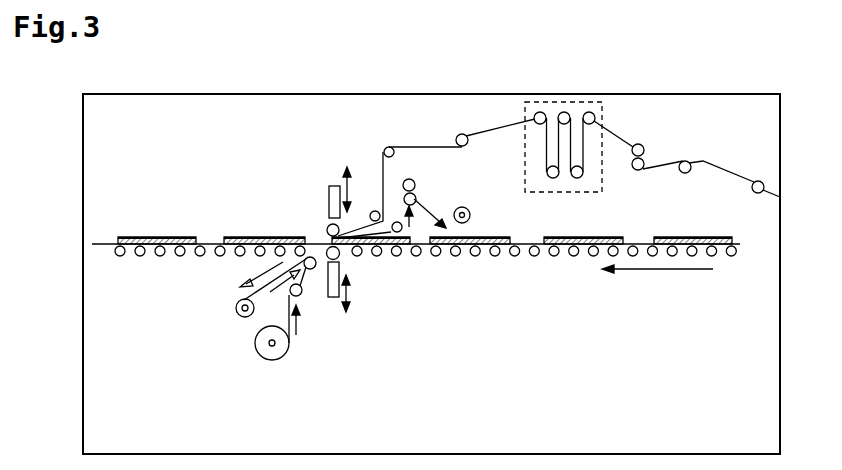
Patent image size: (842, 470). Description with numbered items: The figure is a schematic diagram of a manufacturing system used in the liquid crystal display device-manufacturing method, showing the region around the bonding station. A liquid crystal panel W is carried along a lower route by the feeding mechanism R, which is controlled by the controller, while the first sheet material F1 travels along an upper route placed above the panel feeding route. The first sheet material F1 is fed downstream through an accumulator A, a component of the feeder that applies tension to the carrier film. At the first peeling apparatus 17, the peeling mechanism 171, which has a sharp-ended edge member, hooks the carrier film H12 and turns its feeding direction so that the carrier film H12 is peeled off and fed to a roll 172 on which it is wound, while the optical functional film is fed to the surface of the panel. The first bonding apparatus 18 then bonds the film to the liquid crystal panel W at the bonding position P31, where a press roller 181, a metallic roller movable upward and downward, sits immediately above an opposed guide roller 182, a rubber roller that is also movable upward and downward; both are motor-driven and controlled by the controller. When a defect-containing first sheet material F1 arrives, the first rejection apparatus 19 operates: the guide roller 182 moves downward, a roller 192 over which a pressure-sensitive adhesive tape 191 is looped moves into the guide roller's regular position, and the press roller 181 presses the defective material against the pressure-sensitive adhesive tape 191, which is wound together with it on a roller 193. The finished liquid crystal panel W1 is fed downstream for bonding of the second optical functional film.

The feeding mechanism R is at (575, 268).
The liquid crystal panel W is at (695, 236).
The liquid crystal panel W1 is at (233, 237).
The first sheet material F1 is at (703, 161).
The accumulator A is at (583, 178).
The first bonding apparatus 18 is at (322, 175).
The press roller 181 is at (327, 227).
The bonding position P31 is at (351, 219).
The peeling mechanism 171 is at (415, 192).
The first peeling apparatus 17 is at (432, 191).
The carrier film H12 is at (441, 206).
The roll 172 is at (471, 215).
The guide roller 182 is at (342, 257).
The first rejection apparatus 19 is at (286, 335).
The roller 192 is at (313, 269).
The roller 193 is at (236, 306).
The pressure-sensitive adhesive tape 191 is at (249, 346).